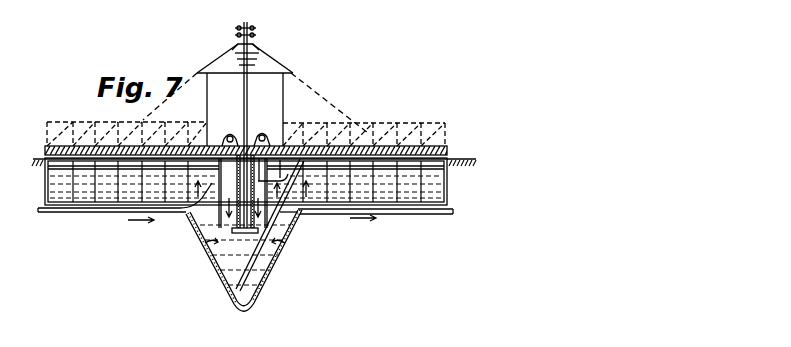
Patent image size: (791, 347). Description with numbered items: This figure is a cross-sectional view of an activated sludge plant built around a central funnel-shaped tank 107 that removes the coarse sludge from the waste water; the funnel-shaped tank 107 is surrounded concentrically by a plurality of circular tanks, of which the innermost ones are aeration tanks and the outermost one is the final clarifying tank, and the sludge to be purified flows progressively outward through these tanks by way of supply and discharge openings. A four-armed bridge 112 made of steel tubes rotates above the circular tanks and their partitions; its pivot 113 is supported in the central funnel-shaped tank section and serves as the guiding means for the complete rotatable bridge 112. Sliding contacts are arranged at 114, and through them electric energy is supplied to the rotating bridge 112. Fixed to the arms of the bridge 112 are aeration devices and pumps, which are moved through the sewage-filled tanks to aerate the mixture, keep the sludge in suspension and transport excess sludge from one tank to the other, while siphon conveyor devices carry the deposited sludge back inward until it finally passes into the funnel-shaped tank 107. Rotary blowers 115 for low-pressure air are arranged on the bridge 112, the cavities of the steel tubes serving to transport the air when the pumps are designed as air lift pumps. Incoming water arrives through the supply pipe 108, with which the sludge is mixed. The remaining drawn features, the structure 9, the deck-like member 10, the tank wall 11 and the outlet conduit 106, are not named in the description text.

The discharge conduit 9 is at (331, 209).
The deck 10 is at (423, 172).
The hull tank 11 is at (446, 190).
The outlet pipe 106 is at (385, 203).
The funnel-shaped tank 107 is at (190, 233).
The supply pipe 108 is at (95, 212).
The four-armed bridge 112 is at (373, 151).
The pivot 113 is at (247, 106).
The sliding contacts 114 is at (252, 52).
The rotary blowers 115 is at (265, 141).